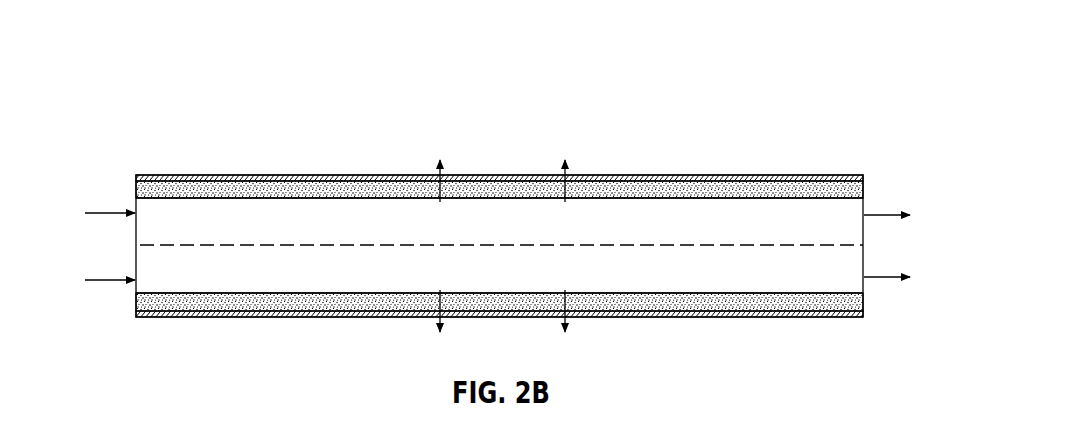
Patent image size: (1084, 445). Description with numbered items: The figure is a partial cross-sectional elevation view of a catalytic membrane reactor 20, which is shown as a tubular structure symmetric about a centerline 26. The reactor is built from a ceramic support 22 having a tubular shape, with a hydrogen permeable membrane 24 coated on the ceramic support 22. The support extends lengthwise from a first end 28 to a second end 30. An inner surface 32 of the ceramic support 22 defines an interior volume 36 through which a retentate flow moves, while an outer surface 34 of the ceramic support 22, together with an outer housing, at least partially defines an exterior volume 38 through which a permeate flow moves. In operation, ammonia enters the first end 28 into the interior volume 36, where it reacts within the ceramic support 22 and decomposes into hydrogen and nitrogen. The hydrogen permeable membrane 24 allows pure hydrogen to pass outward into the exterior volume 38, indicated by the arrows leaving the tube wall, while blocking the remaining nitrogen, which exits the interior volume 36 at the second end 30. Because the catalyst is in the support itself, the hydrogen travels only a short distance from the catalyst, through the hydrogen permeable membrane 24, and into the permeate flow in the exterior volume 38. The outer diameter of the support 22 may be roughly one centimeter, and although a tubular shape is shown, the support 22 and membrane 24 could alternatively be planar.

The catalytic membrane reactor 20 is at (678, 121).
The ceramic support 22 is at (173, 187).
The hydrogen permeable membrane 24 is at (268, 175).
The centerline 26 is at (175, 246).
The first end 28 is at (136, 232).
The second end 30 is at (863, 233).
The inner surface 32 is at (748, 198).
The outer surface 34 is at (810, 180).
The interior volume 36 is at (373, 211).
The exterior volume 38 is at (604, 160).